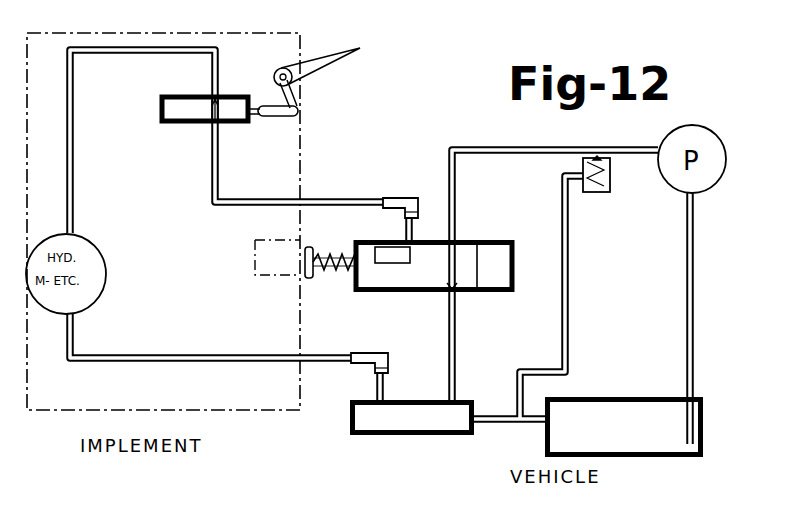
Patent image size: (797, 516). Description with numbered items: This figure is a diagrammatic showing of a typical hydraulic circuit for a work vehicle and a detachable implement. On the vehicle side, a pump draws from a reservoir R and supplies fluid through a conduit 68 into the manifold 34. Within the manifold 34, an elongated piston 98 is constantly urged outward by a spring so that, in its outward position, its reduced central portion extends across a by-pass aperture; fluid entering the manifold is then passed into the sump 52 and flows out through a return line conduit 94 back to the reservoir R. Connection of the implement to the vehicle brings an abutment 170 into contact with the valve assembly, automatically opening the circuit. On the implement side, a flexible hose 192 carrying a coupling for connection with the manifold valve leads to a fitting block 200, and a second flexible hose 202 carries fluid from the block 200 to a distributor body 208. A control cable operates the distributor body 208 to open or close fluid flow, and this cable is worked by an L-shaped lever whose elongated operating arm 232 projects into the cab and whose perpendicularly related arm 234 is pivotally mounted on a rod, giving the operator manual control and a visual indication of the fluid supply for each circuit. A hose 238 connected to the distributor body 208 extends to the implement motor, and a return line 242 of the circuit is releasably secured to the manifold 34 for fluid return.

The hose 238 is at (130, 47).
The operating arm 232 is at (318, 60).
The arm 234 is at (298, 102).
The distributor body 208 is at (182, 123).
The second flexible hose 202 is at (266, 199).
The fitting block 200 is at (407, 200).
The flexible hose 192 is at (406, 232).
The abutment 170 is at (278, 272).
The elongated piston 98 is at (338, 276).
The manifold 34 is at (413, 290).
The return line 242 is at (207, 361).
The sump 52 is at (415, 433).
The return line conduit 94 is at (502, 422).
The conduit 68 is at (650, 146).
The reservoir R is at (658, 440).